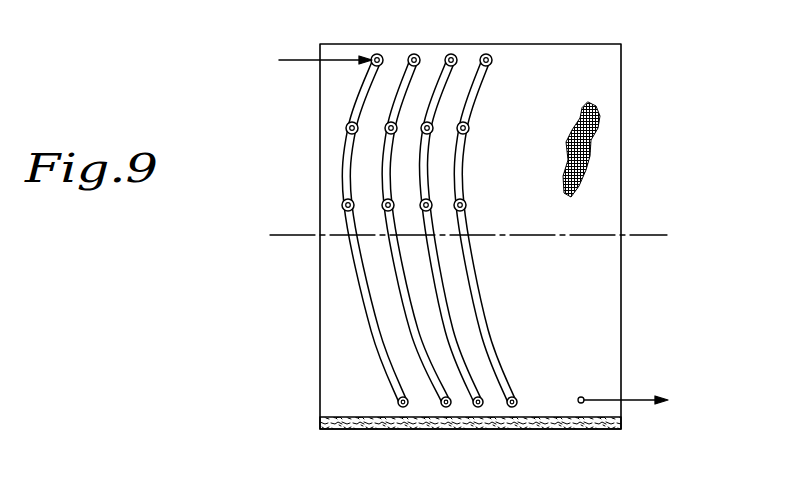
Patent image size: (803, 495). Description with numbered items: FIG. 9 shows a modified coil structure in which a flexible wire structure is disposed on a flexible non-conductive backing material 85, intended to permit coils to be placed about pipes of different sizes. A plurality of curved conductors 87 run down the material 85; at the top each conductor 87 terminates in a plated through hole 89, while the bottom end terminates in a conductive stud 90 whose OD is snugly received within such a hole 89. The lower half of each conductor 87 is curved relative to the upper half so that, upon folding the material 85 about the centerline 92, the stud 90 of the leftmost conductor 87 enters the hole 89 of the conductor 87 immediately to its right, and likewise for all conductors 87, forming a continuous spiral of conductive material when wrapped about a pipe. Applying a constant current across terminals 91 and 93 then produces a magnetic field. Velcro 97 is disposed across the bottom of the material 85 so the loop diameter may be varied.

The material 85 is at (573, 92).
The conductor 87 is at (385, 163).
The hole 89 is at (418, 55).
The conductive stud 90 is at (407, 406).
The terminal 91 is at (302, 59).
The centerline 92 is at (637, 233).
The terminal 93 is at (632, 399).
The Velcro 97 is at (320, 420).